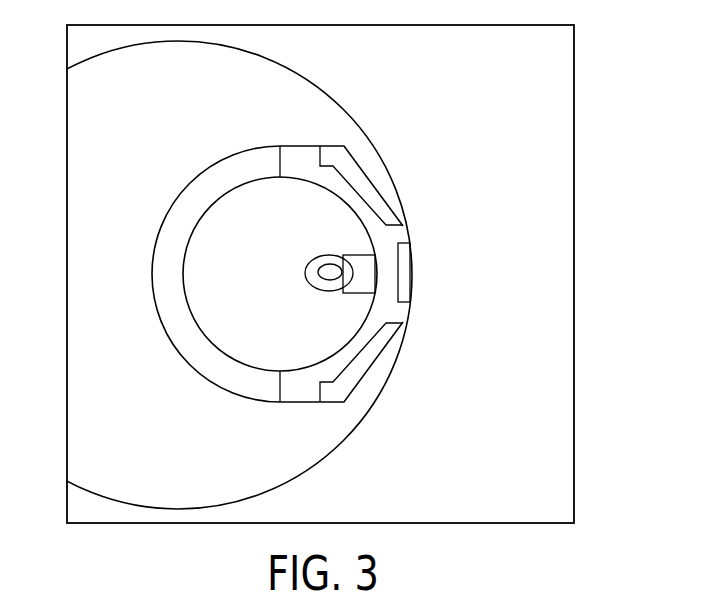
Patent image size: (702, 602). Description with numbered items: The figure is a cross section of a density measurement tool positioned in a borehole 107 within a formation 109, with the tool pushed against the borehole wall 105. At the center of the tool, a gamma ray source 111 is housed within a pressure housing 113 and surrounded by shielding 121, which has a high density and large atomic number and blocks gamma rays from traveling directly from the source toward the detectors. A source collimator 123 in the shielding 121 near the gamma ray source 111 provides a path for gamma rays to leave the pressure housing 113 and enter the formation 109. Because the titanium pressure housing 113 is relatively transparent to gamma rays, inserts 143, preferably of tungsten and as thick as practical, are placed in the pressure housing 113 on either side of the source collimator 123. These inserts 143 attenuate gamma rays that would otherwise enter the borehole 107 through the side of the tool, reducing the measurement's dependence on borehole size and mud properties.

The borehole wall 105 is at (280, 484).
The borehole 107 is at (80, 338).
The formation 109 is at (527, 83).
The gamma ray source 111 is at (328, 272).
The pressure housing 113 is at (222, 177).
The shielding 121 is at (263, 278).
The source collimator 123 is at (368, 276).
The inserts 143 is at (381, 205).